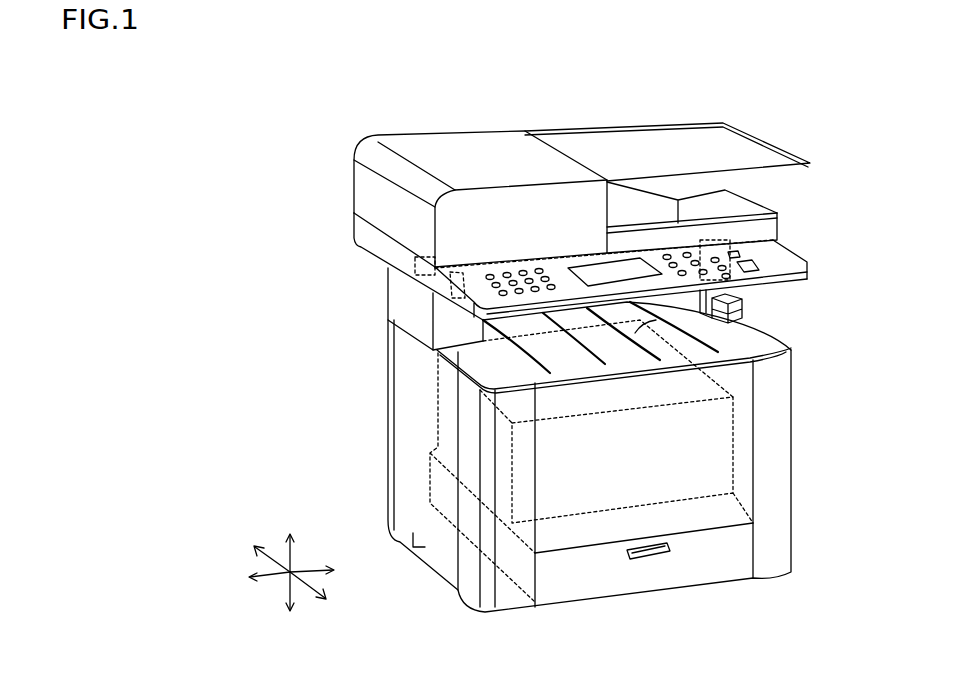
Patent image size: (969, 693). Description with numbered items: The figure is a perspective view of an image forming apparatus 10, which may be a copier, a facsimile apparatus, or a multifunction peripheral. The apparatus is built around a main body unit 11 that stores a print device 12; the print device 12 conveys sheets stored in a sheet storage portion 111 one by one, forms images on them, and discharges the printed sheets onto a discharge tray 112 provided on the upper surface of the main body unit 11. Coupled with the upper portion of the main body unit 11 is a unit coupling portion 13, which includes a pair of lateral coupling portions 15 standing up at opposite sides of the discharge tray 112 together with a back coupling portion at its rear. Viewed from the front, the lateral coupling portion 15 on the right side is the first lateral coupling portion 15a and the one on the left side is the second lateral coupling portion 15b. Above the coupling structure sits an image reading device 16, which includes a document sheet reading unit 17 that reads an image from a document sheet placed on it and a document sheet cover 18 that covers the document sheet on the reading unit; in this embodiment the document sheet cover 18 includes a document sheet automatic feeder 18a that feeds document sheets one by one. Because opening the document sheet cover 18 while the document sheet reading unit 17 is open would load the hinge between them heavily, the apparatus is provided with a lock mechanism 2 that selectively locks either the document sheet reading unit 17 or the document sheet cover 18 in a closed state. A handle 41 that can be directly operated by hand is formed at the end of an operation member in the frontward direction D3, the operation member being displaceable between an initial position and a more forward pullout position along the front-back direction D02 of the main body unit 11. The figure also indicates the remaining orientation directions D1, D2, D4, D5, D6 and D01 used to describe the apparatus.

The image forming apparatus 10 is at (346, 117).
The image reading device 16 is at (278, 183).
The document sheet cover 18 is at (351, 206).
The document sheet automatic feeder 18a is at (490, 153).
The document sheet reading unit 17 is at (351, 233).
The unit coupling portion 13 is at (376, 284).
The lock mechanism 2 is at (404, 273).
The lateral coupling portion 15 is at (567, 281).
The second lateral coupling portion 15b is at (387, 302).
The first lateral coupling portion 15a is at (752, 303).
The handle 41 is at (760, 295).
The main body unit 11 is at (385, 406).
The print device 12 is at (733, 443).
The sheet storage portion 111 is at (733, 550).
The discharge tray 112 is at (762, 363).
The direction D1 is at (327, 571).
The direction D2 is at (253, 581).
The frontward direction D3 is at (320, 598).
The direction D4 is at (259, 551).
The direction D5 is at (290, 541).
The direction D6 is at (290, 605).
The direction D01 is at (305, 572).
The front-back direction D02 is at (313, 586).